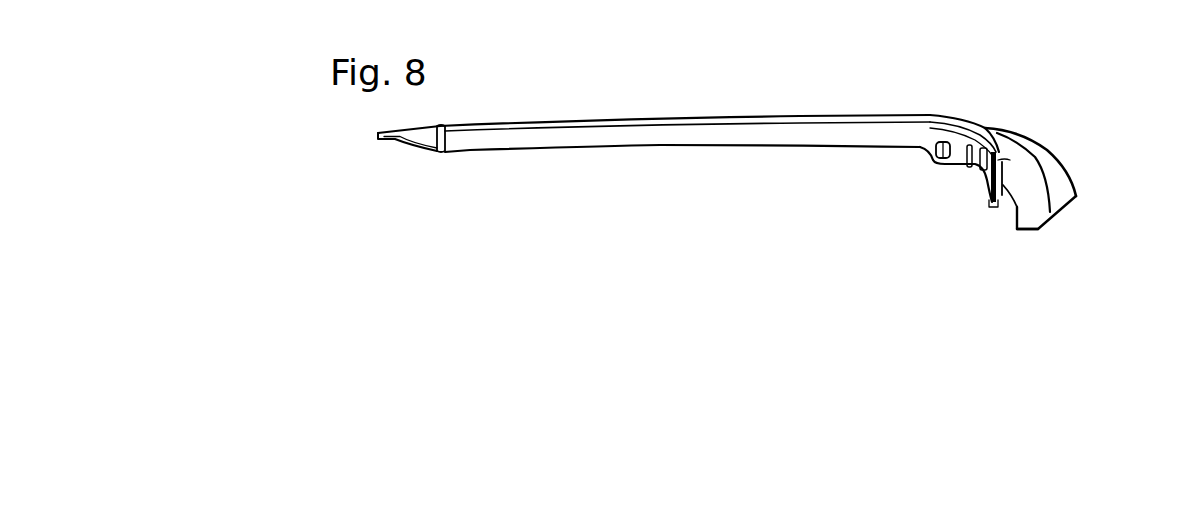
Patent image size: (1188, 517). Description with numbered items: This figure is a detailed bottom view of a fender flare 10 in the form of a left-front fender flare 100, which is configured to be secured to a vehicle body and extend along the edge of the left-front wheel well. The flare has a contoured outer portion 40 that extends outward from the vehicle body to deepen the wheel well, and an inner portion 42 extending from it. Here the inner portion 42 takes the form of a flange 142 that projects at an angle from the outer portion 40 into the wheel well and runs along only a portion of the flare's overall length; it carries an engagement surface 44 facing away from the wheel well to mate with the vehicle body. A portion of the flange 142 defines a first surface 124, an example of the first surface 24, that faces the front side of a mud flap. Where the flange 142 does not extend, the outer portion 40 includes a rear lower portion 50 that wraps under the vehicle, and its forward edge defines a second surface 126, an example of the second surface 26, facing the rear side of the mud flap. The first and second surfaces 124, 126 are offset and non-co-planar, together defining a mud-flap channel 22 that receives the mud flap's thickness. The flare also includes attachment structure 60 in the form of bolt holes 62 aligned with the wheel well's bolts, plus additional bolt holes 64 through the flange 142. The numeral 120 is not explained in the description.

The fender flare 10 is at (985, 37).
The left-front fender flare 100 is at (1018, 69).
The head 120 is at (1174, 6).
The inner portion 42 is at (582, 182).
The flange 142 is at (670, 175).
The engagement surface 44 is at (805, 140).
The bolt holes 64 is at (943, 142).
The bolt holes 62 is at (983, 148).
The attachment structure 60 is at (930, 195).
The second surface 26 is at (1013, 157).
The outer portion 40 is at (1092, 149).
The first surface 124 is at (1000, 175).
The first surface 24 is at (1003, 200).
The mud-flap channel 22 is at (989, 230).
The second surface 126 is at (1013, 221).
The rear lower portion 50 is at (1075, 235).